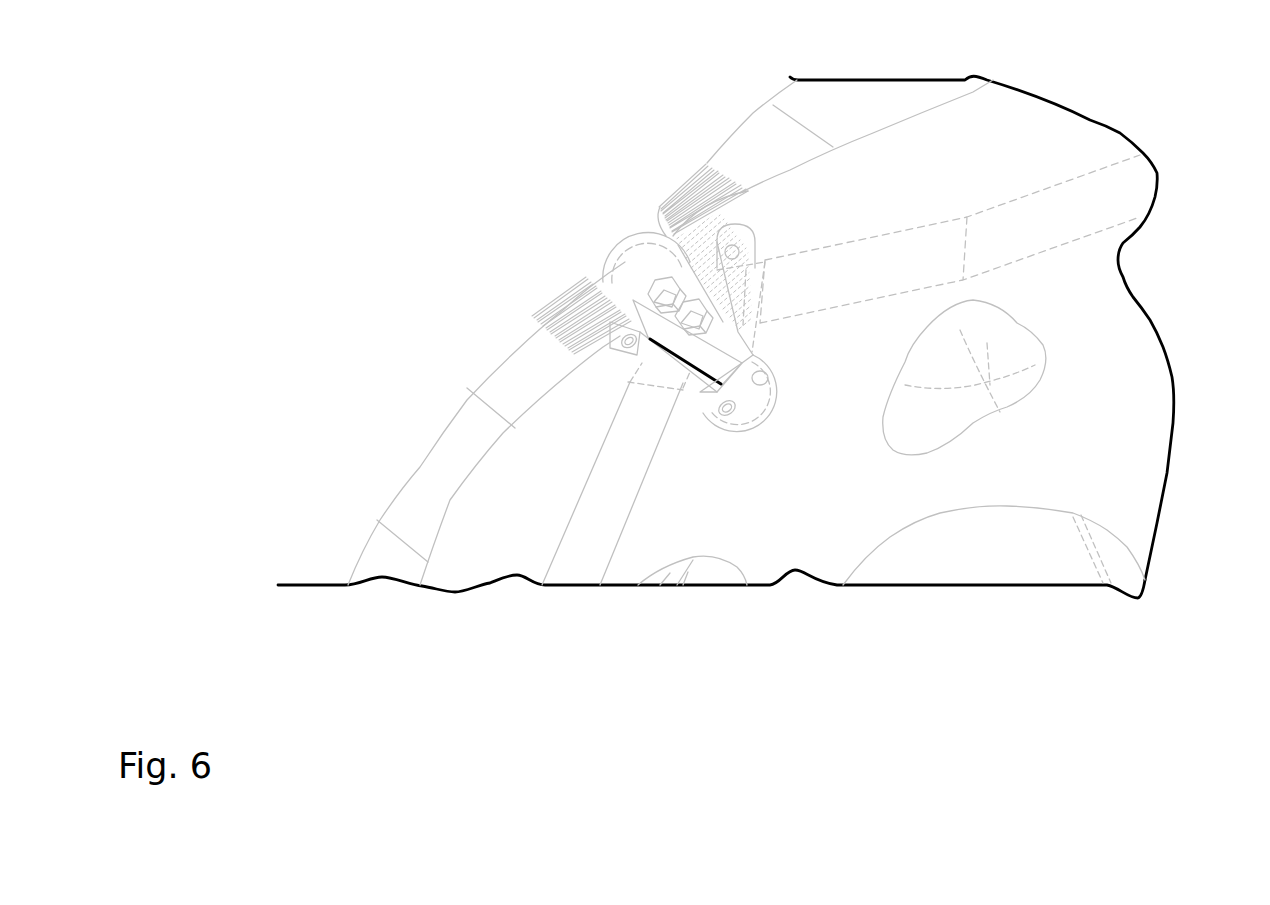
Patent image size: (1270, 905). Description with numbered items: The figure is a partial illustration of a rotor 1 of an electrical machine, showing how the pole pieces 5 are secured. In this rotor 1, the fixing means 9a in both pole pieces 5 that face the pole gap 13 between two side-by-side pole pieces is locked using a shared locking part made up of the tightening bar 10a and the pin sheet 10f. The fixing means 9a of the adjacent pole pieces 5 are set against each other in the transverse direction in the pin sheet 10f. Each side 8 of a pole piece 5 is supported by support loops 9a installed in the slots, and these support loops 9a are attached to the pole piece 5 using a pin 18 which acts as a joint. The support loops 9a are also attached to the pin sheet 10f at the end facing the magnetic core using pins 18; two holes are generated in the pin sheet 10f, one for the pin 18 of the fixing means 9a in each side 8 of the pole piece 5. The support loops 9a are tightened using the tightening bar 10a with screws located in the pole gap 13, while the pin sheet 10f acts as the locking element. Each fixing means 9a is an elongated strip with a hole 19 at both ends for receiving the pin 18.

The rotor 1 is at (441, 324).
The pole piece 5 is at (534, 503).
The side of the pole piece 8 is at (661, 230).
The fixing means 9a is at (745, 318).
The tightening bar 10a is at (656, 295).
The pin sheet 10f is at (752, 392).
The pole gap 13 is at (765, 430).
The pin 18 is at (737, 246).
The hole 19 is at (625, 347).